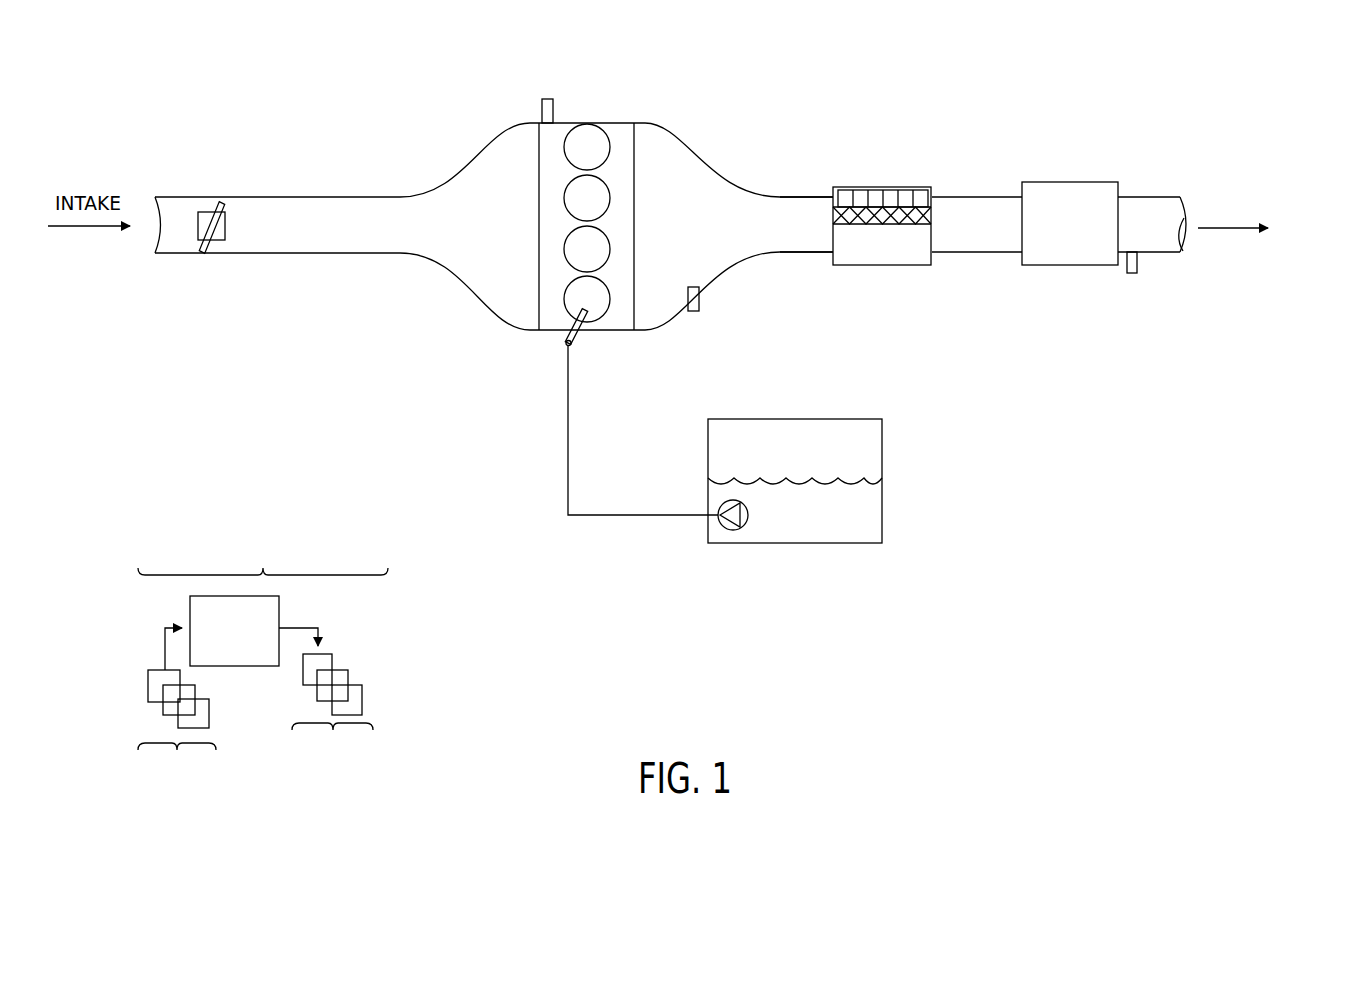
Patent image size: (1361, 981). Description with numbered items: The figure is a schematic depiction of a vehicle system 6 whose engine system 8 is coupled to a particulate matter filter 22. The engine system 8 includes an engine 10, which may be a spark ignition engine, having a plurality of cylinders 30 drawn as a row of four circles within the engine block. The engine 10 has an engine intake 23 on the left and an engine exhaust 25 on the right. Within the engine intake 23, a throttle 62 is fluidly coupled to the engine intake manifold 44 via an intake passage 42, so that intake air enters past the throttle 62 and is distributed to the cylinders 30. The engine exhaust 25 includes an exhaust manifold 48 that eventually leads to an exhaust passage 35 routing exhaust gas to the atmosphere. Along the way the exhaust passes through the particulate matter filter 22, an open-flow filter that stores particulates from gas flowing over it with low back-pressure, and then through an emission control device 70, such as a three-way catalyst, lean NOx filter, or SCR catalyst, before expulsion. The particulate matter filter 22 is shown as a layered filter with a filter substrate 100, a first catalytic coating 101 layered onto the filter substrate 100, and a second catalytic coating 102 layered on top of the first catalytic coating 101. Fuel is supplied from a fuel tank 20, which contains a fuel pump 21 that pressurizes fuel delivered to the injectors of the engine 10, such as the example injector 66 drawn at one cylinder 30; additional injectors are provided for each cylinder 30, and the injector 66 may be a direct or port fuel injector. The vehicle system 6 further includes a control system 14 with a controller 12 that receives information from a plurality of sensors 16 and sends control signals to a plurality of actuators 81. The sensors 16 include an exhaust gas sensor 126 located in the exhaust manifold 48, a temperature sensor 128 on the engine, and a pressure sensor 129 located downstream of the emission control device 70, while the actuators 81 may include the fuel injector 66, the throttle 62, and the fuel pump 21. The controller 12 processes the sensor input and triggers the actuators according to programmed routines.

The vehicle system 6 is at (235, 123).
The engine system 8 is at (878, 72).
The engine 10 is at (636, 207).
The controller 12 is at (234, 631).
The control system 14 is at (263, 551).
The sensors 16 is at (177, 709).
The fuel tank 20 is at (882, 532).
The fuel pump 21 is at (741, 508).
The particulate matter filter 22 is at (860, 177).
The engine intake 23 is at (353, 183).
The engine exhaust 25 is at (713, 150).
The cylinders 30 is at (607, 140).
The exhaust passage 35 is at (1137, 196).
The intake passage 42 is at (262, 254).
The engine intake manifold 44 is at (488, 236).
The exhaust manifold 48 is at (692, 236).
The throttle 62 is at (225, 233).
The fuel injector 66 is at (582, 336).
The emission control device 70 is at (1060, 232).
The actuators 81 is at (326, 700).
The filter substrate 100 is at (896, 250).
The first catalytic coating 101 is at (921, 216).
The second catalytic coating 102 is at (913, 194).
The exhaust gas sensor 126 is at (701, 292).
The temperature sensor 128 is at (554, 109).
The pressure sensor 129 is at (1137, 266).